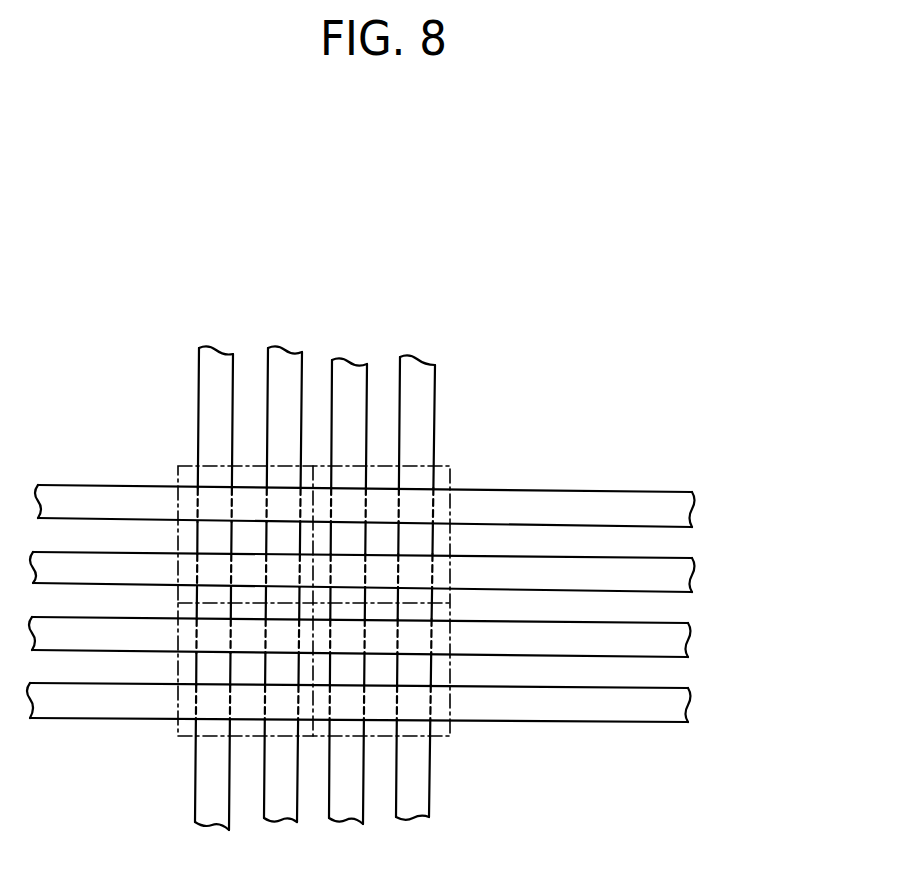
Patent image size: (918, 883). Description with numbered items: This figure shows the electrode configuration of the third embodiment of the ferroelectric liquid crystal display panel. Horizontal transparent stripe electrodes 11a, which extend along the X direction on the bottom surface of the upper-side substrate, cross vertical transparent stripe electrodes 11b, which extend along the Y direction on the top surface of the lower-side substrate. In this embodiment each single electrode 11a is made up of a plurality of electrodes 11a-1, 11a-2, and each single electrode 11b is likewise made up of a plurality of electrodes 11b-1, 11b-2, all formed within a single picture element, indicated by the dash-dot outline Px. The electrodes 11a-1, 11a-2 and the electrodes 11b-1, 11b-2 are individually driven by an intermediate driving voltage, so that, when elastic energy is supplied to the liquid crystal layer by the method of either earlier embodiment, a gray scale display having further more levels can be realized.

The transparent stripe electrode 11a is at (426, 576).
The electrode 11a-1 is at (601, 497).
The electrode 11a-2 is at (607, 560).
The transparent stripe electrode 11b is at (379, 545).
The electrode 11b-1 is at (428, 388).
The electrode 11b-2 is at (363, 419).
The pixel Px is at (187, 472).